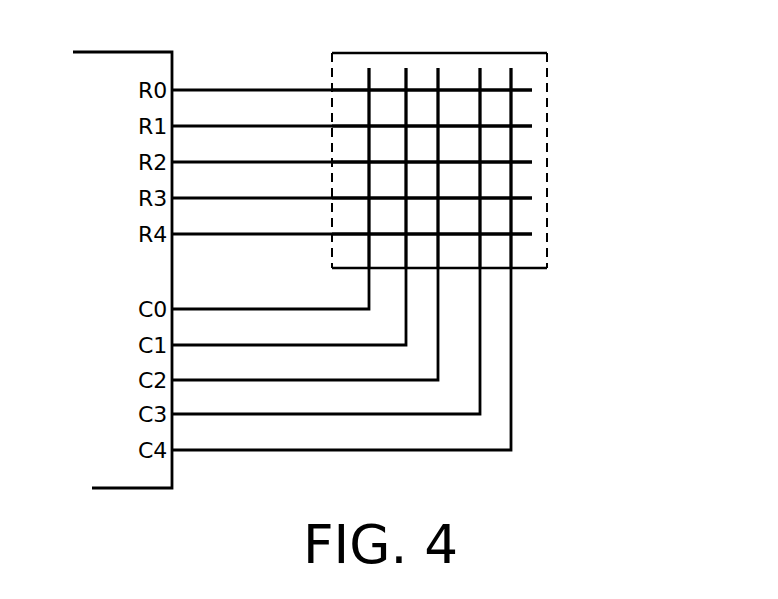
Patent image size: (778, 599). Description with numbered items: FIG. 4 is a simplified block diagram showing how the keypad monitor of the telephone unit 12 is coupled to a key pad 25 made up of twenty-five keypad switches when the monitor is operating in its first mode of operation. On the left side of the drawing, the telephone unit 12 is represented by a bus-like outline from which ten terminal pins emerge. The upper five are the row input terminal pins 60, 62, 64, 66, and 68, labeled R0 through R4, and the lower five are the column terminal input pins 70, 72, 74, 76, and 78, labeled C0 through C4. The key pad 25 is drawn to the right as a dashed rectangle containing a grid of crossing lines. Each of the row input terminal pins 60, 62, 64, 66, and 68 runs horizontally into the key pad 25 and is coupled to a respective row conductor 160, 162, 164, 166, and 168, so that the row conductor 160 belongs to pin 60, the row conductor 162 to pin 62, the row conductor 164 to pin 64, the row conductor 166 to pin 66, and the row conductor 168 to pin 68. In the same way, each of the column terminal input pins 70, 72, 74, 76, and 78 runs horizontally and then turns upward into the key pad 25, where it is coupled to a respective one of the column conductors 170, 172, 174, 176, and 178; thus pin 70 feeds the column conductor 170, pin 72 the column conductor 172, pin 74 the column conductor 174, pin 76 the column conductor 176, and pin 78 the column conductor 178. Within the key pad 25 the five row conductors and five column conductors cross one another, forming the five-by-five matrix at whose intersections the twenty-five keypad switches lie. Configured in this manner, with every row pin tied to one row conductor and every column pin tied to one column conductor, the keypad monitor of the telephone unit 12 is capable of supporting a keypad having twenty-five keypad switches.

The telephone unit 12 is at (88, 66).
The key pad 25 is at (439, 147).
The row input terminal pin 60 is at (176, 89).
The row input terminal pin 62 is at (176, 125).
The row input terminal pin 64 is at (176, 161).
The row input terminal pin 66 is at (176, 197).
The row input terminal pin 68 is at (176, 233).
The column terminal input pin 70 is at (176, 308).
The column terminal input pin 72 is at (176, 344).
The column terminal input pin 74 is at (176, 379).
The column terminal input pin 76 is at (176, 413).
The column terminal input pin 78 is at (176, 449).
The row conductor 160 is at (530, 92).
The row conductor 162 is at (530, 127).
The row conductor 164 is at (530, 163).
The row conductor 166 is at (530, 199).
The row conductor 168 is at (530, 235).
The column conductor 170 is at (369, 82).
The column conductor 172 is at (406, 76).
The column conductor 174 is at (438, 74).
The column conductor 176 is at (480, 74).
The column conductor 178 is at (511, 72).